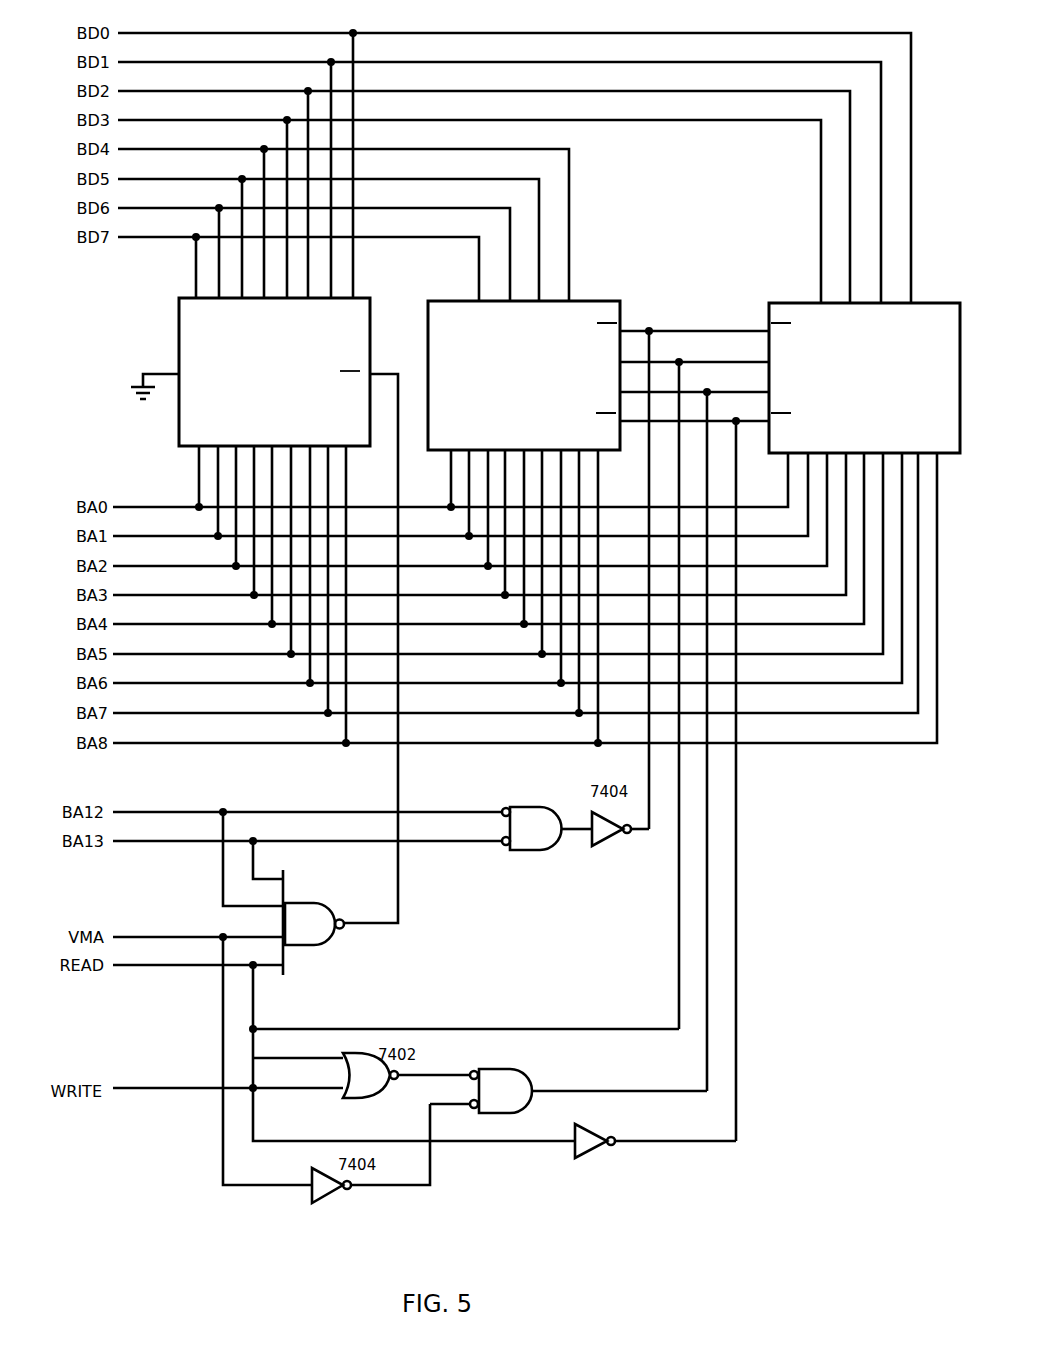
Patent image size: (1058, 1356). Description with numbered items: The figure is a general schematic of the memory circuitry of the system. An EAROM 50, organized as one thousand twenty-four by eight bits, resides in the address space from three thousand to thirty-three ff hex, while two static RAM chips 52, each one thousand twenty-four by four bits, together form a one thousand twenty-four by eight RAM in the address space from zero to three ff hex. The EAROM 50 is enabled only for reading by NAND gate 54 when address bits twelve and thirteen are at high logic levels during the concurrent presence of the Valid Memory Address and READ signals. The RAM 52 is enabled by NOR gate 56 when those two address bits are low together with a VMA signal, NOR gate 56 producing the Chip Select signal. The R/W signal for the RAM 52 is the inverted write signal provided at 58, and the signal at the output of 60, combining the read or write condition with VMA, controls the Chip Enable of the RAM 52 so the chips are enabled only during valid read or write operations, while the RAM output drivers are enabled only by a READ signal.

The EAROM 50 is at (179, 320).
The static RAM chips 52 is at (598, 302).
The NAND gate 54 is at (312, 946).
The NOR gate 56 is at (535, 851).
The inverter 58 is at (585, 1160).
The gate 60 is at (531, 1074).